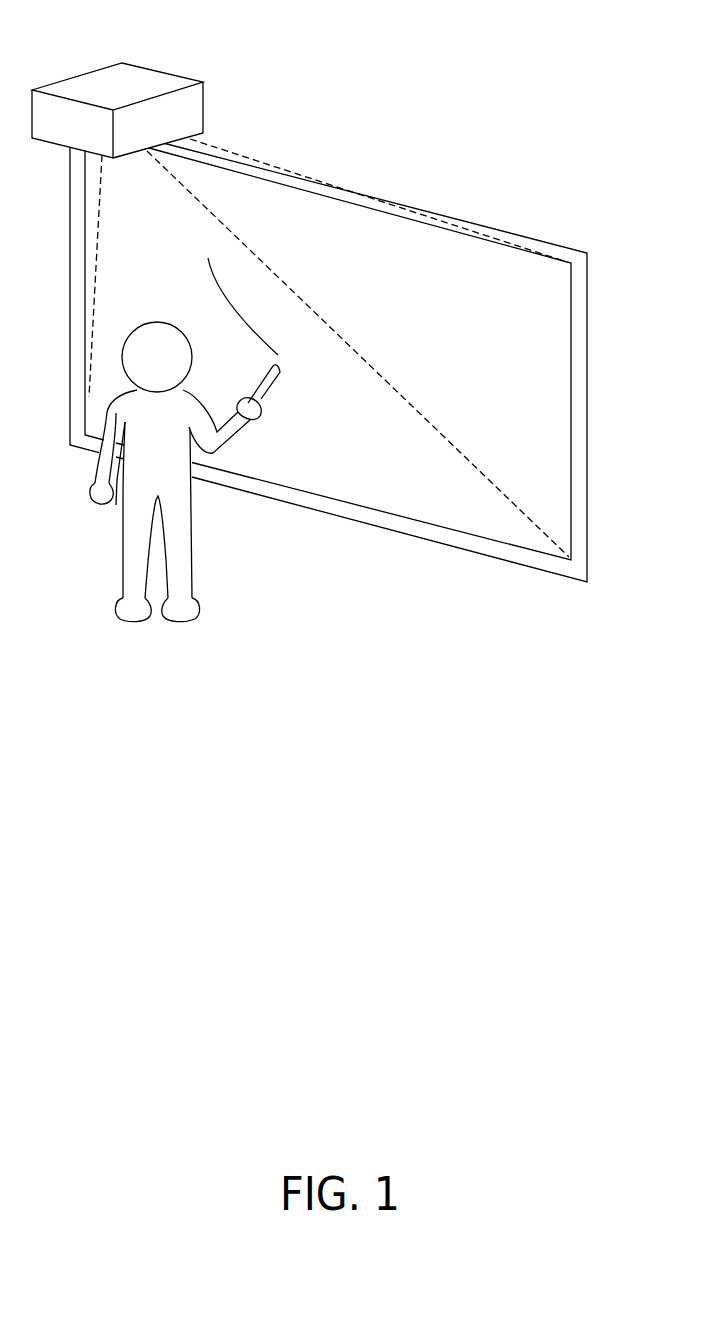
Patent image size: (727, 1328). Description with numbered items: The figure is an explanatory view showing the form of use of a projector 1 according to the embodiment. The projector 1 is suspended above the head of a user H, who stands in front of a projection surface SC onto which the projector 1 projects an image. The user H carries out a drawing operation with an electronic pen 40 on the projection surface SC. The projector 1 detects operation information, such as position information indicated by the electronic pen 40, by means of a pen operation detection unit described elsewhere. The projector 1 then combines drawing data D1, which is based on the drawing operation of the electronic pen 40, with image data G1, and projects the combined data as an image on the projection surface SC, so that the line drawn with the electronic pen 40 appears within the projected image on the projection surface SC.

The projector 1 is at (97, 82).
The projection surface SC is at (588, 378).
The image data G1 is at (553, 453).
The drawing data D1 is at (214, 279).
The user H is at (122, 550).
The electronic pen 40 is at (267, 394).